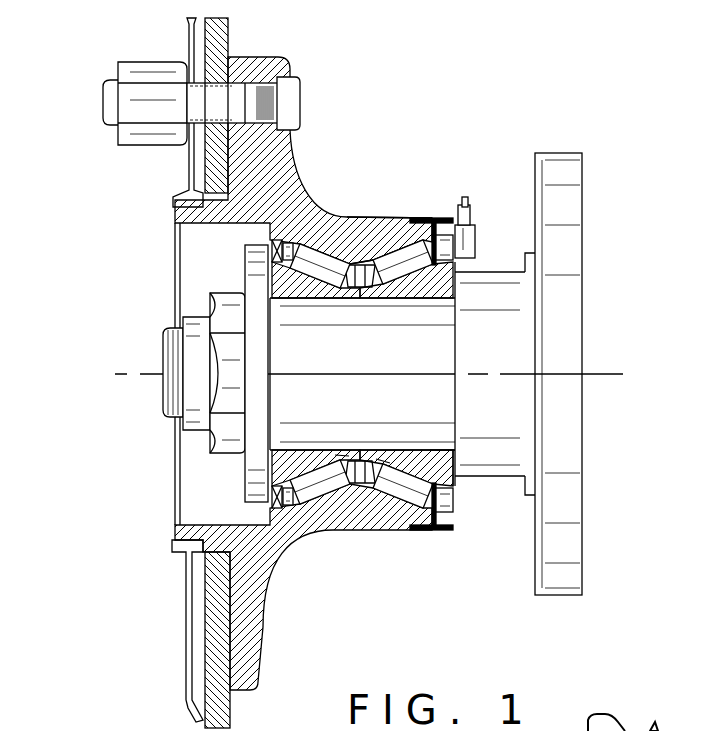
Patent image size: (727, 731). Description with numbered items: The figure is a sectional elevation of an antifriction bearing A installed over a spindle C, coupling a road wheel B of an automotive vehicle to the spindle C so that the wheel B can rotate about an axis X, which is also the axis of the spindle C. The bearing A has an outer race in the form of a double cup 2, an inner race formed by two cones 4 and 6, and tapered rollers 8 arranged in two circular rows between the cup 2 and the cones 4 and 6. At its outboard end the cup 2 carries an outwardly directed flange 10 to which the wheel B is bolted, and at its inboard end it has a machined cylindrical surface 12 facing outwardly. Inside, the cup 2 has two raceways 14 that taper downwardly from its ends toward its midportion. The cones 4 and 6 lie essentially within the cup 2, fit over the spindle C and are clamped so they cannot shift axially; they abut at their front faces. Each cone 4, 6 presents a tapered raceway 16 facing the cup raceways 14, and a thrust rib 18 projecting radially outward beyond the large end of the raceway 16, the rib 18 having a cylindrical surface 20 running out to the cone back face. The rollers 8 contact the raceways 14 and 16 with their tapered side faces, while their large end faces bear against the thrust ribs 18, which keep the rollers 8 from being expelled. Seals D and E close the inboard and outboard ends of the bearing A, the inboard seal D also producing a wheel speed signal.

The double cup 2 is at (392, 219).
The cone 4 is at (393, 300).
The cone 6 is at (322, 300).
The tapered rollers 8 is at (395, 264).
The outwardly directed flange 10 is at (272, 150).
The machined cylindrical surface 12 is at (428, 532).
The raceways 14 is at (370, 502).
The raceway 16 is at (373, 452).
The thrust rib 18 is at (440, 262).
The cylindrical surface 20 is at (445, 451).
The antifriction bearing A is at (398, 553).
The road wheel B is at (183, 168).
The spindle C is at (163, 405).
The inboard seal D is at (438, 219).
The outboard seal E is at (270, 491).
The axis of rotation X is at (381, 375).